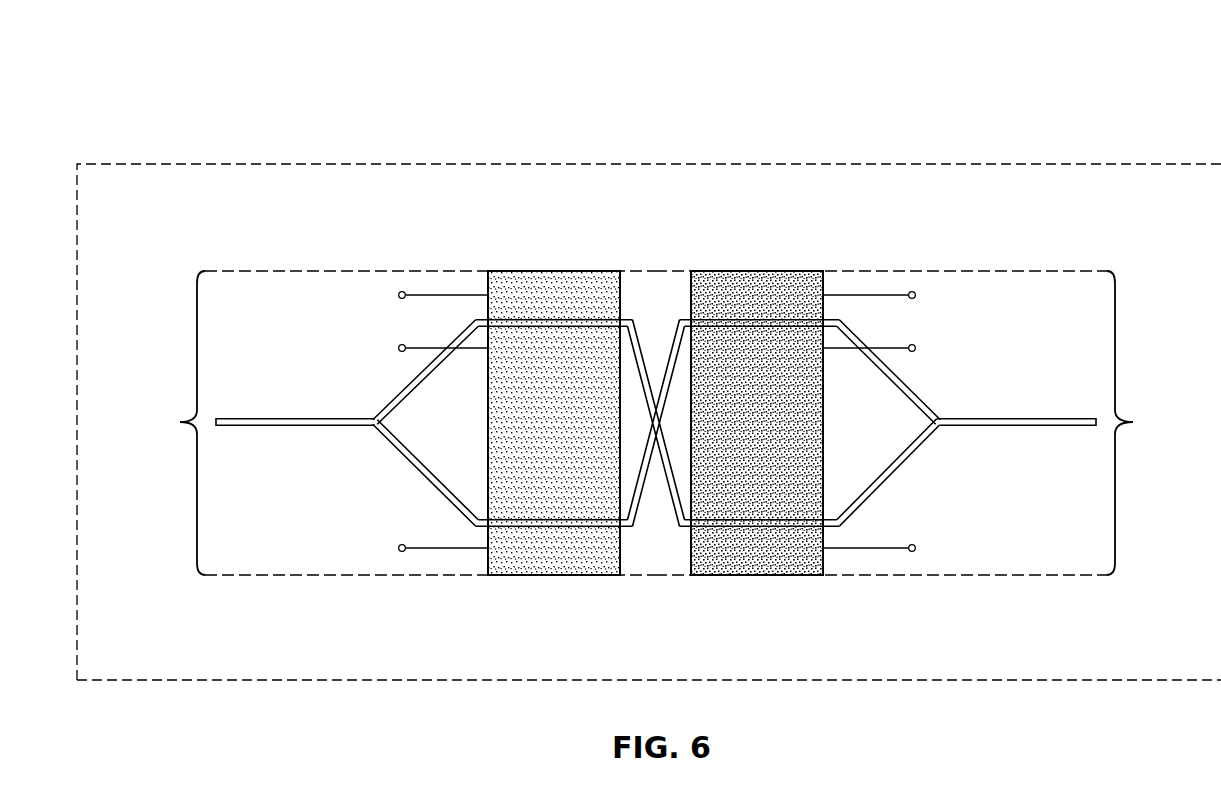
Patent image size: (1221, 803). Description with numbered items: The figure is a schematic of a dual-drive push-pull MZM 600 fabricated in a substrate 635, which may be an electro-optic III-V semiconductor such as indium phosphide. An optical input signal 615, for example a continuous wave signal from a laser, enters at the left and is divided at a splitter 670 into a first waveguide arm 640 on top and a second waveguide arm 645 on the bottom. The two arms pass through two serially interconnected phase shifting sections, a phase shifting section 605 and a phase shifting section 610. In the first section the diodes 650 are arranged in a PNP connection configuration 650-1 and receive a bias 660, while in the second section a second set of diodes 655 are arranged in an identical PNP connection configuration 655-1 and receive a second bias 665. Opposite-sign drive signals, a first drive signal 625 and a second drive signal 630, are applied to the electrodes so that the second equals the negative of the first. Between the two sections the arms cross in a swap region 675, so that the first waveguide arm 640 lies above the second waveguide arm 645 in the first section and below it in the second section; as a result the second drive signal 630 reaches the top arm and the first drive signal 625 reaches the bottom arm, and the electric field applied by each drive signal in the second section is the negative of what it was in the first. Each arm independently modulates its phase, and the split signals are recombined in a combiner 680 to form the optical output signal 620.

The dual-drive push-pull MZM 600 is at (127, 63).
The phase shifting section 605 is at (565, 271).
The phase shifting section 610 is at (728, 271).
The optical input signal 615 is at (265, 427).
The optical output signal 620 is at (1020, 427).
The first drive signal 625 is at (403, 290).
The second drive signal 630 is at (403, 553).
The substrate 635 is at (153, 163).
The first waveguide arm 640 is at (498, 320).
The second waveguide arm 645 is at (513, 530).
The diodes 650 is at (612, 292).
The PNP connection configuration 650-1 is at (378, 423).
The second set of diodes 655 is at (803, 287).
The PNP connection configuration 655-1 is at (937, 423).
The bias 660 is at (401, 353).
The second bias 665 is at (912, 353).
The splitter 670 is at (372, 427).
The swap region 675 is at (658, 466).
The combiner 680 is at (941, 428).